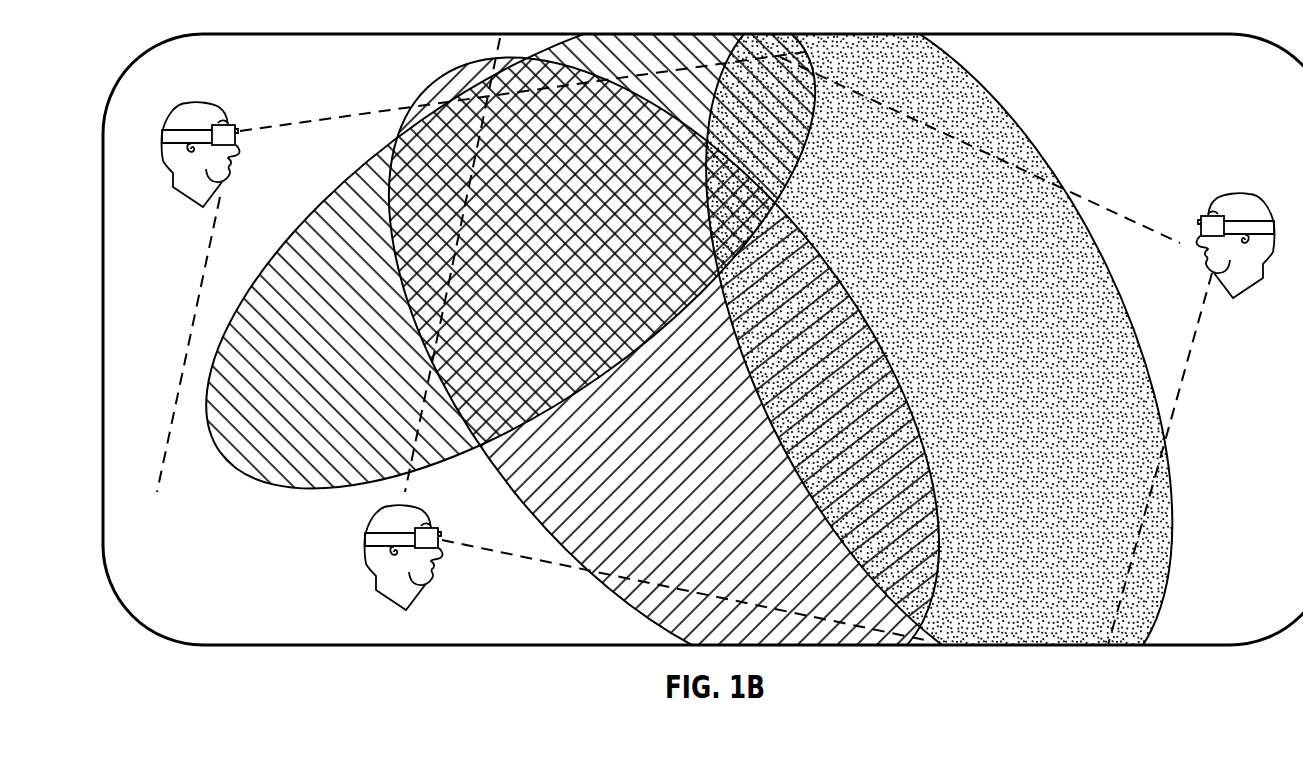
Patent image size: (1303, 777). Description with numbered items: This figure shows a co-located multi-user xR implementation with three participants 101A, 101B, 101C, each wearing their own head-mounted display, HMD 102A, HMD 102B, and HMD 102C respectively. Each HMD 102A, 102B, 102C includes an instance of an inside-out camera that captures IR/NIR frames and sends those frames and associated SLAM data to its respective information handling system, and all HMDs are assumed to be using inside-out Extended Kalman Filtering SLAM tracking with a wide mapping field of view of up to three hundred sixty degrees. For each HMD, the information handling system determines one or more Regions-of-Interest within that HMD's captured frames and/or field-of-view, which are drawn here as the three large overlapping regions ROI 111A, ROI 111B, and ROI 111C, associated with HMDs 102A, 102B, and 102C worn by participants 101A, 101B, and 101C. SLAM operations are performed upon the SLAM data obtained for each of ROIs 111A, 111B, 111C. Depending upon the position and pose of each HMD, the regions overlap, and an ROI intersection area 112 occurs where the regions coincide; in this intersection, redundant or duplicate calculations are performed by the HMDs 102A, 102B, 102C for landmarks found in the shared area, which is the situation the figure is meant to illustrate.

The participant 101A is at (372, 588).
The participant 101B is at (1255, 292).
The participant 101C is at (188, 205).
The HMD 102A is at (433, 526).
The HMD 102B is at (1208, 215).
The HMD 102C is at (228, 124).
The Region-of-Interest (ROI) 111A is at (640, 628).
The Region-of-Interest (ROI) 111B is at (1014, 110).
The Region-of-Interest (ROI) 111C is at (205, 386).
The ROI intersection area 112 is at (920, 423).